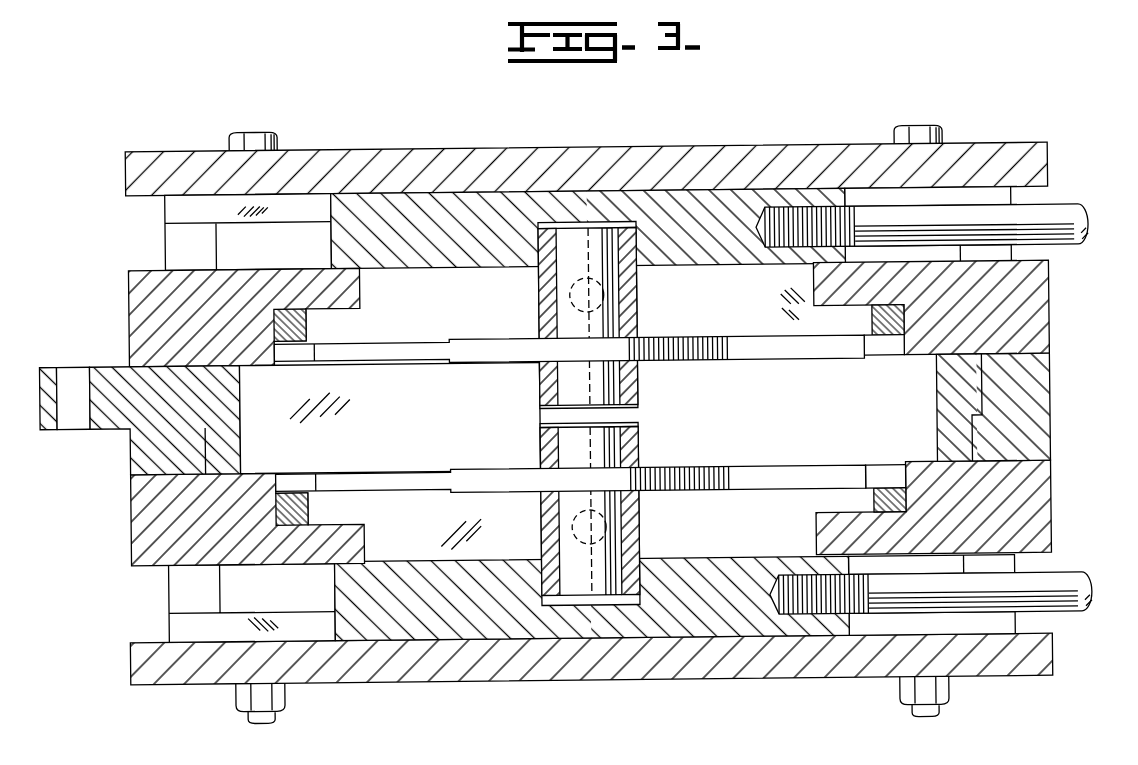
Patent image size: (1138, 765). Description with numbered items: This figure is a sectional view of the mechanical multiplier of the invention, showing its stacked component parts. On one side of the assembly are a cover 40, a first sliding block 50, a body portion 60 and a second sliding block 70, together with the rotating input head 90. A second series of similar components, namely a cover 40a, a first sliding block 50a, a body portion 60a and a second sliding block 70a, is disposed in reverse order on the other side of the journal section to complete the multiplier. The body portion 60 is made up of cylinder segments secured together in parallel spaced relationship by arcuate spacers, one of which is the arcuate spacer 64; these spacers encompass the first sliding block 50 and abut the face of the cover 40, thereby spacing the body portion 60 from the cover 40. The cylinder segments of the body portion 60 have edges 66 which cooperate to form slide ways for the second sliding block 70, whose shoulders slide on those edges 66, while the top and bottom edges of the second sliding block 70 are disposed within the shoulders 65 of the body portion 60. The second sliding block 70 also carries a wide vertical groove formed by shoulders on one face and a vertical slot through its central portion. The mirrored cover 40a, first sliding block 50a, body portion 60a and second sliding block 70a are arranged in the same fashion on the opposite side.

The cover 40 is at (770, 123).
The cover 40a is at (818, 668).
The first sliding block 50 is at (743, 267).
The first sliding block 50a is at (750, 563).
The body portion 60 is at (1038, 326).
The body portion 60a is at (1043, 533).
The arcuate spacer 64 is at (178, 585).
The shoulders 65 is at (278, 507).
The edges 66 is at (366, 542).
The second sliding block 70 is at (892, 343).
The second sliding block 70a is at (892, 500).
The rotating input head 90 is at (965, 416).